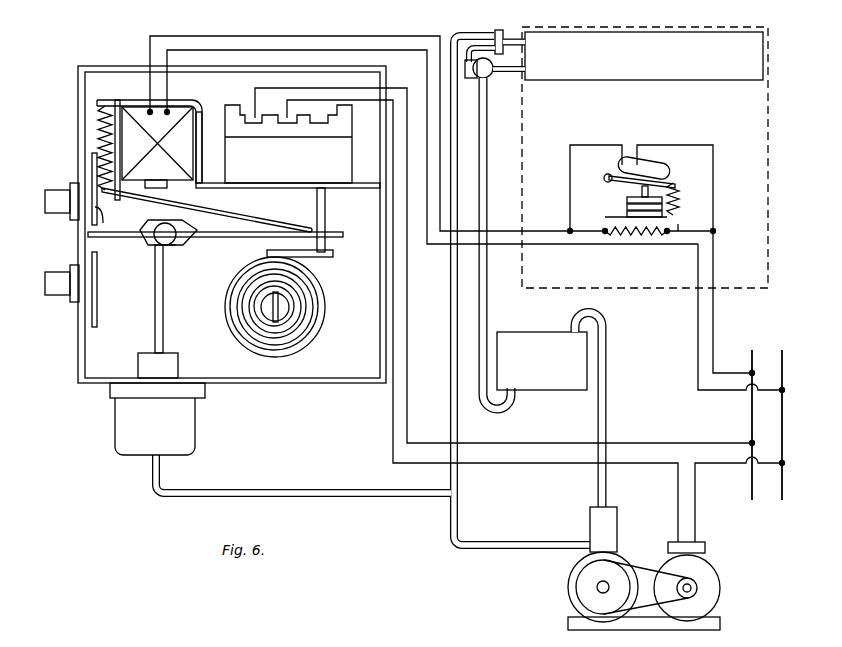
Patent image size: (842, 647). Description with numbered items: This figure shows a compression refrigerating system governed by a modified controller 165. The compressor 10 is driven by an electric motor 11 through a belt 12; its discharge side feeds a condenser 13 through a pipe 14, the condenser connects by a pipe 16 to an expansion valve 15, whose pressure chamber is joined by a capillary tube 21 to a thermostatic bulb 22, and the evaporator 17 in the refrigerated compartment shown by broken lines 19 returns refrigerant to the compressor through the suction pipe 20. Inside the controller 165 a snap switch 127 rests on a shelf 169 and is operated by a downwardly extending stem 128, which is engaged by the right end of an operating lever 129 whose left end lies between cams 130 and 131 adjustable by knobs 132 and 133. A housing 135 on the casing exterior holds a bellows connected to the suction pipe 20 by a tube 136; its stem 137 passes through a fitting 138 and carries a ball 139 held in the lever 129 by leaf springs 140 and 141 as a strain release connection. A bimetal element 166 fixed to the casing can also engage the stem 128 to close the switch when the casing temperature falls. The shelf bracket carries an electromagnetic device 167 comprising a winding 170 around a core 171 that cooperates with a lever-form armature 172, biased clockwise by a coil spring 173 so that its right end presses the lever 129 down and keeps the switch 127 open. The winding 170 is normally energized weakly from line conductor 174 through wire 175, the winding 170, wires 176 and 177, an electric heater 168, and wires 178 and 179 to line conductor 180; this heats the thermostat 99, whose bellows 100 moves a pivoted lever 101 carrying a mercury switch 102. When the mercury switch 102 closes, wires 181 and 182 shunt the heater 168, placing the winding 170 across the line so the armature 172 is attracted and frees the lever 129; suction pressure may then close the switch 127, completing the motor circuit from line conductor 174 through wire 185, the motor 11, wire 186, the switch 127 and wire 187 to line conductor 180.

The compressor 10 is at (617, 520).
The electric motor 11 is at (706, 578).
The belt 12 is at (640, 566).
The condenser 13 is at (550, 367).
The pipe 14 is at (607, 388).
The expansion valve 15 is at (494, 84).
The pipe 16 is at (486, 303).
The evaporator 17 is at (665, 62).
The refrigerated compartment 19 is at (770, 148).
The suction pipe 20 is at (450, 355).
The capillary tube 21 is at (474, 34).
The thermostatic bulb 22 is at (510, 52).
The thermostat 99 is at (687, 195).
The bellows 100 is at (628, 210).
The pivoted lever 101 is at (615, 184).
The mercury switch 102 is at (649, 170).
The snap switch 127 is at (293, 166).
The operating stem 128 is at (325, 207).
The operating lever 129 is at (250, 238).
The cam 130 is at (111, 191).
The cam 131 is at (97, 313).
The knob 132 is at (55, 200).
The knob 133 is at (55, 282).
The housing 135 is at (180, 427).
The tube 136 is at (298, 489).
The operating stem 137 is at (163, 313).
The fitting 138 is at (140, 362).
The ball 139 is at (152, 245).
The leaf spring 140 is at (165, 220).
The leaf spring 141 is at (178, 247).
The controller 165 is at (401, 80).
The bimetal element 166 is at (317, 332).
The electromagnetic device 167 is at (194, 99).
The electric heater 168 is at (642, 236).
The shelf 169 is at (214, 185).
The electrical winding 170 is at (186, 151).
The core 171 is at (167, 190).
The armature 172 is at (252, 217).
The coil spring 173 is at (98, 128).
The line conductor 174 is at (782, 430).
The wire 175 is at (698, 340).
The wire 176 is at (497, 230).
The wire 177 is at (590, 245).
The wire 178 is at (694, 230).
The wire 179 is at (715, 313).
The line conductor 180 is at (752, 413).
The wire 181 is at (580, 145).
The wire 182 is at (705, 145).
The wire 185 is at (726, 464).
The wire 186 is at (535, 462).
The wire 187 is at (548, 442).